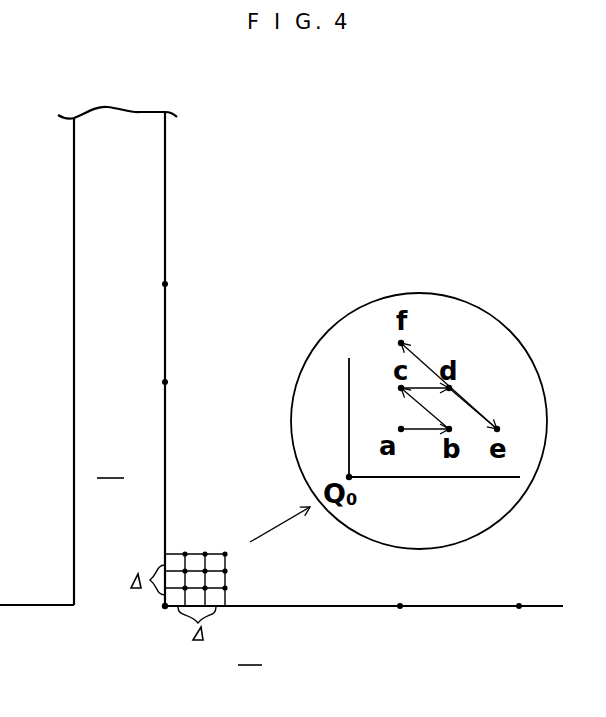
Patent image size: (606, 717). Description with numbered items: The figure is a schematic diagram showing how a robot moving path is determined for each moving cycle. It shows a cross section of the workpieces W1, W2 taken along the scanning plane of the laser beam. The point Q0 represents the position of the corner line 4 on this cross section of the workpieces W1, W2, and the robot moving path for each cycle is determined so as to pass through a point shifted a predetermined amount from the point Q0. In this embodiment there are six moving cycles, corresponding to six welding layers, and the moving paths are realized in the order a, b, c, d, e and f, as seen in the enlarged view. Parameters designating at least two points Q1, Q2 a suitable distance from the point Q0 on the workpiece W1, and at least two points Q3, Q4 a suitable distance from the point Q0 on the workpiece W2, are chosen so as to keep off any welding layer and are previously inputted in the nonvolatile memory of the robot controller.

The corner line 4 is at (167, 610).
The point Q0 is at (150, 619).
The point Q1 is at (522, 627).
The point Q2 is at (402, 627).
The point Q3 is at (145, 381).
The point Q4 is at (145, 286).
The workpiece W1 is at (364, 635).
The workpiece W2 is at (66, 361).